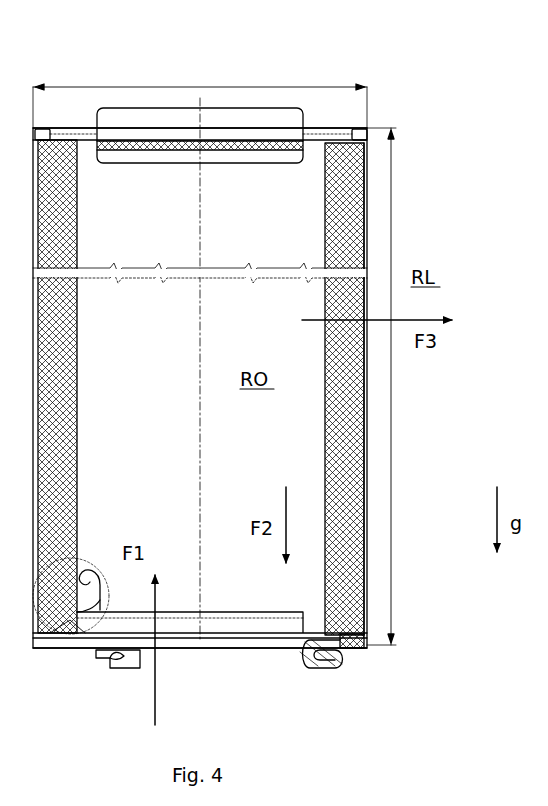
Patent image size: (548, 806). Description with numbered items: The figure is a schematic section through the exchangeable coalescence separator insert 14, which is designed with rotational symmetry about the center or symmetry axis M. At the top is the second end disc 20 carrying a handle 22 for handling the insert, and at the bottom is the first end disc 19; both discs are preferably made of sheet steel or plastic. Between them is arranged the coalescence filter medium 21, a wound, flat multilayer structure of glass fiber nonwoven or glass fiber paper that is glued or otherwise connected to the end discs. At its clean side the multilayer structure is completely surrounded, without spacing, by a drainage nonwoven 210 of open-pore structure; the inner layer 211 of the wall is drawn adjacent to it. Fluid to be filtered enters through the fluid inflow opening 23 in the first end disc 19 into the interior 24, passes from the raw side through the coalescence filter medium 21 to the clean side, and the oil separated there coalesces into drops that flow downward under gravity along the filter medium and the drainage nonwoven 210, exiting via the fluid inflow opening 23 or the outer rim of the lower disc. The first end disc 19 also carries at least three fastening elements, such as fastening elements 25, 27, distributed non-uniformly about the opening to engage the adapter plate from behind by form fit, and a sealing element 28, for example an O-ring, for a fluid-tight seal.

The exchangeable coalescence separator insert 14 is at (159, 78).
The first end disc 19 is at (215, 656).
The second end disc 20 is at (56, 124).
The coalescence filter medium 21 is at (338, 553).
The handle 22 is at (292, 108).
The fluid inflow opening 23 is at (263, 640).
The interior 24 is at (250, 467).
The fastening element 25 is at (98, 670).
The fastening element 27 is at (318, 668).
The sealing element 28 is at (342, 650).
The drainage nonwoven 210 is at (355, 505).
The inner wall layer 211 is at (77, 512).
The symmetry axis M is at (200, 235).